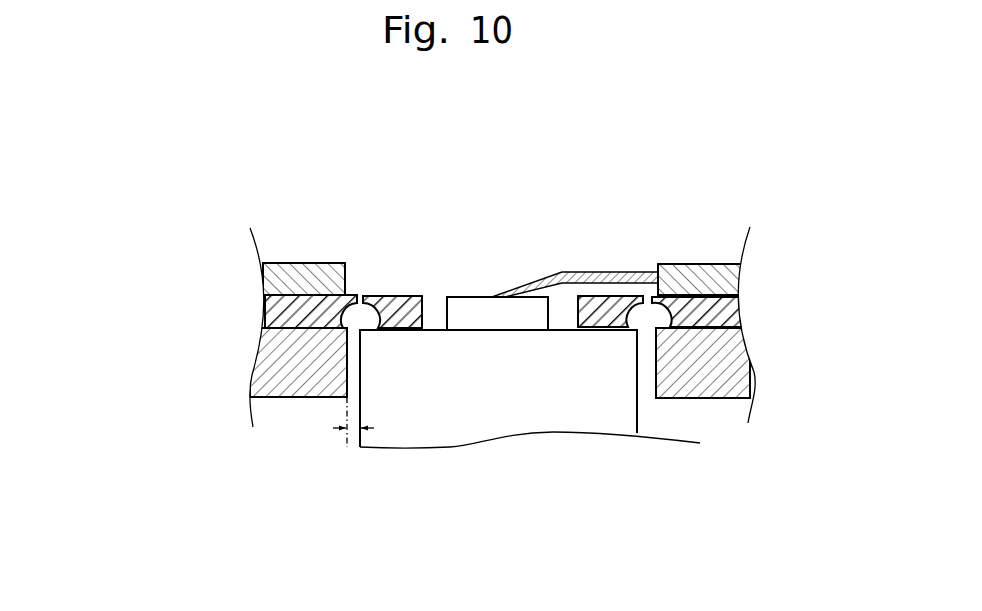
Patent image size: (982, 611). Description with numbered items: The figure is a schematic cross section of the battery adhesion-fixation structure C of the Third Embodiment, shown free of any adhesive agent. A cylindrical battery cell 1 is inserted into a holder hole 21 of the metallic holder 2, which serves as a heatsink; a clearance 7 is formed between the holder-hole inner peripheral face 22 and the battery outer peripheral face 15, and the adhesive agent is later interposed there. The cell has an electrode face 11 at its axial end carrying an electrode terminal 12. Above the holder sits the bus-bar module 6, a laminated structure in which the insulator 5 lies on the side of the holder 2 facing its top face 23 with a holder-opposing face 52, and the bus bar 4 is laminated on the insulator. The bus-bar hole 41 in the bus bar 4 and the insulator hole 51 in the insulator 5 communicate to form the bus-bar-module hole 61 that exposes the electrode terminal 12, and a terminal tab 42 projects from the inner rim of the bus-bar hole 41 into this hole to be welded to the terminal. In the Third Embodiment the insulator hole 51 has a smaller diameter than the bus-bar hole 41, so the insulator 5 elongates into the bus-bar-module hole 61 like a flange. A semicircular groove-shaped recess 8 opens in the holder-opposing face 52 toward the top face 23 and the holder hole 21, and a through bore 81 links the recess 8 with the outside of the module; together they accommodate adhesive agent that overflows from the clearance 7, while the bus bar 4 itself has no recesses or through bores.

The battery adhesion-fixation structure C is at (132, 167).
The battery cell 1 is at (450, 432).
The electrode face 11 is at (428, 330).
The electrode terminal 12 is at (498, 323).
The battery outer peripheral face 15 is at (640, 416).
The holder 2 is at (274, 358).
The holder hole 21 is at (352, 365).
The holder-hole inner peripheral face 22 is at (654, 384).
The top face 23 is at (724, 313).
The bus bar 4 is at (274, 279).
The insulator 5 is at (272, 313).
The bus-bar module 6 is at (157, 232).
The clearance 7 is at (347, 432).
The recess 8 is at (365, 321).
The through bore 81 is at (357, 300).
The bus-bar hole 41 is at (483, 271).
The terminal tab 42 is at (573, 279).
The insulator hole 51 is at (575, 251).
The holder-opposing face 52 is at (592, 329).
The bus-bar-module hole 61 is at (557, 195).